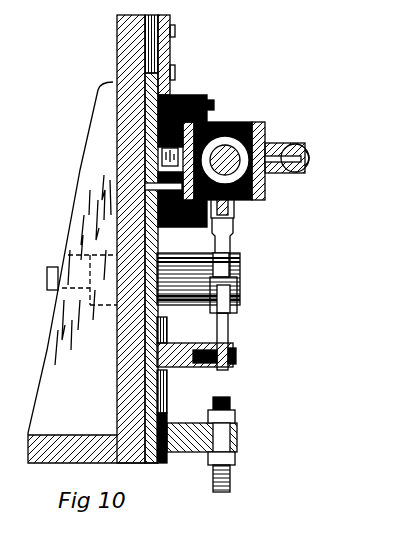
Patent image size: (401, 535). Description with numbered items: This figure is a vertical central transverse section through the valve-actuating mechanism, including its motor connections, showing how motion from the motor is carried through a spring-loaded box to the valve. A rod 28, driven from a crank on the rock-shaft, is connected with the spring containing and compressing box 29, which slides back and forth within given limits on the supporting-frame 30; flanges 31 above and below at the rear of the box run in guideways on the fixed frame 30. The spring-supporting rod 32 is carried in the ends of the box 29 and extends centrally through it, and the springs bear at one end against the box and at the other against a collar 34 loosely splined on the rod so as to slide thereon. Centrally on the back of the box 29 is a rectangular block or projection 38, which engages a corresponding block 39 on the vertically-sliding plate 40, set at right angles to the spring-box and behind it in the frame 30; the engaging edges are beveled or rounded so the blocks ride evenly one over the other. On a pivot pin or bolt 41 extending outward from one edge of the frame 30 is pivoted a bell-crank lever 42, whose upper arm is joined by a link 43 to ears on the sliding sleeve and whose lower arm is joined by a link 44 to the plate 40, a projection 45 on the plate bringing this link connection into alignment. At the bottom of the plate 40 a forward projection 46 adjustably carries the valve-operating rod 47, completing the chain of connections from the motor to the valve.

The rod 28 is at (293, 173).
The spring containing and compressing box 29 is at (263, 123).
The supporting-frame 30 is at (125, 48).
The flanges 31 is at (205, 118).
The spring-supporting rod 32 is at (257, 184).
The collar 34 is at (247, 123).
The rectangular block or projection 38 is at (170, 161).
The projection or block 39 is at (145, 190).
The vertically-sliding plate 40 is at (163, 396).
The pivot pin or bolt 41 is at (47, 280).
The bell-crank lever 42 is at (233, 264).
The link 43 is at (228, 206).
The link 44 is at (228, 331).
The projection 45 is at (184, 353).
The forward projection 46 is at (194, 452).
The valve-operating rod 47 is at (232, 468).